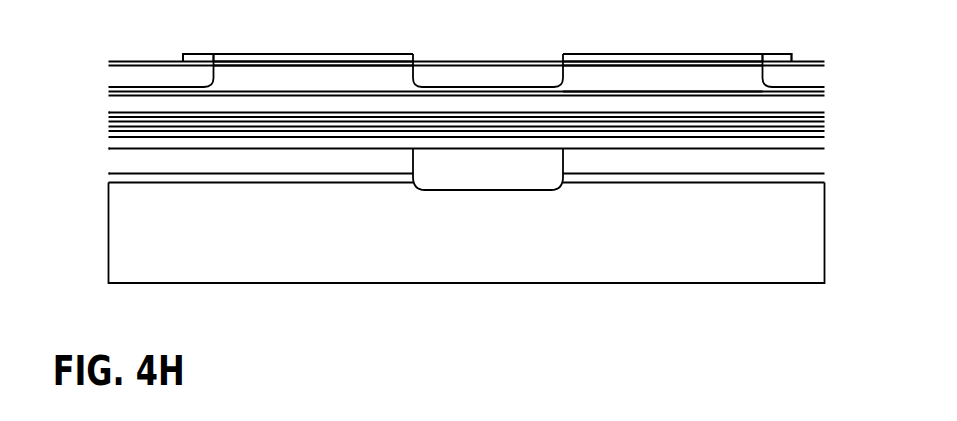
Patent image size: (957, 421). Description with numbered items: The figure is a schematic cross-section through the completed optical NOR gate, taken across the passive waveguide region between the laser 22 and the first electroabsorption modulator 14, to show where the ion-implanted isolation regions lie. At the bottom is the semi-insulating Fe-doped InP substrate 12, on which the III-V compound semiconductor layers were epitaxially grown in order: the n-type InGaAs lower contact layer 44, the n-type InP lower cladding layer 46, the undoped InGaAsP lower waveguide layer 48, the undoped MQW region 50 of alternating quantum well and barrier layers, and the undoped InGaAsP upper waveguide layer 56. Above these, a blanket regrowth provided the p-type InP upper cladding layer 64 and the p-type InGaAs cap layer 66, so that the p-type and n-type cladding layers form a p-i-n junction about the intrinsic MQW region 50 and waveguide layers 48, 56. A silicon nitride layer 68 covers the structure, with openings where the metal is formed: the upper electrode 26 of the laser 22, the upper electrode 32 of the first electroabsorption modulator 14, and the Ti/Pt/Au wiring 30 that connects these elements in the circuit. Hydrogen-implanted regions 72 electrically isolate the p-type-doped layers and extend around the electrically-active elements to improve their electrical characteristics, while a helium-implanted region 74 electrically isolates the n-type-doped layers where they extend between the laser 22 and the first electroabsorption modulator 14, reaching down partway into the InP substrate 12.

The substrate 12 is at (137, 250).
The first electroabsorption modulator 14 is at (593, 50).
The laser 22 is at (252, 52).
The upper electrode 26 is at (317, 53).
The wiring 30 is at (192, 52).
The upper electrode 32 is at (650, 53).
The lower contact layer 44 is at (116, 178).
The lower cladding layer 46 is at (826, 164).
The lower waveguide layer 48 is at (116, 143).
The MQW region 50 is at (826, 112).
The upper waveguide layer 56 is at (116, 106).
The upper cladding layer 64 is at (370, 80).
The cap layer 66 is at (717, 63).
The silicon nitride layer 68 is at (125, 60).
The hydrogen-implanted region 72 is at (117, 77).
The helium-implanted region 74 is at (470, 179).